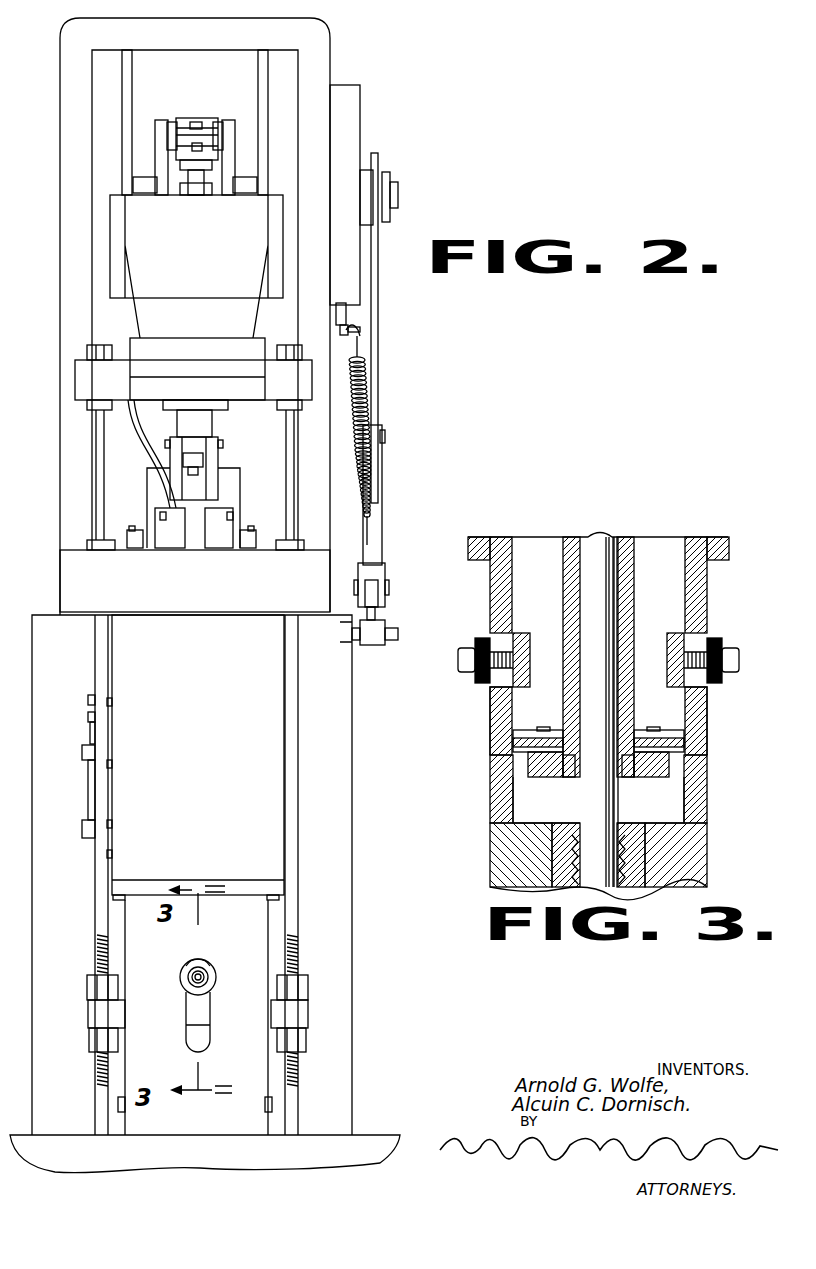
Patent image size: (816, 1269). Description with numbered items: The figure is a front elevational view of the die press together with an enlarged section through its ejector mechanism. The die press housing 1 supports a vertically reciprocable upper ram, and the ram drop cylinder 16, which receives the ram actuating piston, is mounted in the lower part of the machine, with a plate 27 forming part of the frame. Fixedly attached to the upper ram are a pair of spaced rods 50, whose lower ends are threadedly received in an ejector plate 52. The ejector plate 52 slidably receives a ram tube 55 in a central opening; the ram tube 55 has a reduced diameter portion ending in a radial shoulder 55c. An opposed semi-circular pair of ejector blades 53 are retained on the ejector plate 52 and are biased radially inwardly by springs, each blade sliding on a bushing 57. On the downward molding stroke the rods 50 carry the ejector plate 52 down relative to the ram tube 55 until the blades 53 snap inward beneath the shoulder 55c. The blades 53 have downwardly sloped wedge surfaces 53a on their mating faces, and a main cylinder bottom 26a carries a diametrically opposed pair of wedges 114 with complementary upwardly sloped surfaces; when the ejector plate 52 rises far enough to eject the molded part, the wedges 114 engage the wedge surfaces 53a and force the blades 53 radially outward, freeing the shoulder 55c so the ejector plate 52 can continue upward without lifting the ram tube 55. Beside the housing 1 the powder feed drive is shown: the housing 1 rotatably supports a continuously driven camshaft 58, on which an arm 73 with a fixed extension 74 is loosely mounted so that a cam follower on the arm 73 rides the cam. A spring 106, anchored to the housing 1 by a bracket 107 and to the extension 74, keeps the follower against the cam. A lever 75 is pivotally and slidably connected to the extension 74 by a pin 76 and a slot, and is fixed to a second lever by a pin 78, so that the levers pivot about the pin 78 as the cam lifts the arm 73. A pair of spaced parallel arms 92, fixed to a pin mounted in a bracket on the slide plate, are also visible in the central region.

In FIG. 2, the die press housing 1 is at (333, 67).
In FIG. 2, the cylinder 16 is at (90, 783).
In FIG. 3, the main cylinder bottom 26a is at (700, 590).
In FIG. 2, the plate 27 is at (226, 592).
In FIG. 2, the rods 50 is at (100, 435).
In FIG. 2, the ejector plate 52 is at (302, 1013).
In FIG. 3, the ejector blades 53 is at (668, 738).
In FIG. 3, the wedge surfaces 53a is at (680, 745).
In FIG. 3, the ram tube 55 is at (630, 655).
In FIG. 3, the radial shoulder 55c is at (632, 760).
In FIG. 3, the bushing 57 is at (640, 755).
In FIG. 2, the camshaft 58 is at (400, 193).
In FIG. 2, the arm 73 is at (378, 348).
In FIG. 2, the extension 74 is at (380, 540).
In FIG. 2, the lever 75 is at (375, 613).
In FIG. 2, the pin 76 is at (389, 590).
In FIG. 2, the pin 78 is at (398, 633).
In FIG. 2, the arms 92 is at (208, 458).
In FIG. 2, the spring 106 is at (366, 396).
In FIG. 2, the bracket 107 is at (366, 330).
In FIG. 3, the wedges 114 is at (518, 637).